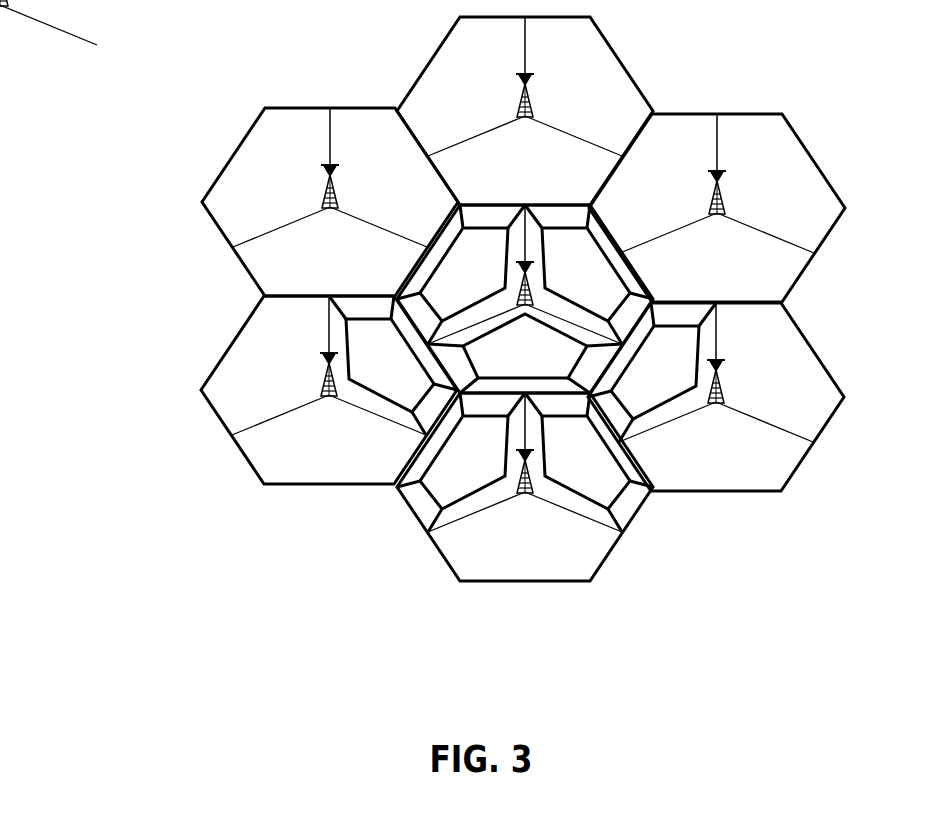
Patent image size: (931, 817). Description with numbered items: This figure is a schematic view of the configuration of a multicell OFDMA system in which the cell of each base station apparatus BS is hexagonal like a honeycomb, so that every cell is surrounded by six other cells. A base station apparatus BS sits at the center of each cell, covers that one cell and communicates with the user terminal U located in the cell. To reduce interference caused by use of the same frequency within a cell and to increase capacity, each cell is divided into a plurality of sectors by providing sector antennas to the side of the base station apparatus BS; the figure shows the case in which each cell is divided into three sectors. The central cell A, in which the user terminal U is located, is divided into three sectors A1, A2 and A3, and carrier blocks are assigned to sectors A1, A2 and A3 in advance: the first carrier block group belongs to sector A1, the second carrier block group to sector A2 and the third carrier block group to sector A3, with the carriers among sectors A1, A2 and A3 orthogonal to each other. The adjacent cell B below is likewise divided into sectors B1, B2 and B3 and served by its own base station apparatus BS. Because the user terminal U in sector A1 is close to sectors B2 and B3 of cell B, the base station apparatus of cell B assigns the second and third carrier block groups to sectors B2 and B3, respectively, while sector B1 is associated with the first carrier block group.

The base station apparatus BS is at (322, 221).
The user terminal U is at (478, 365).
The sector A1 is at (525, 353).
The sector A2 is at (589, 274).
The sector A3 is at (461, 274).
The sector B1 is at (531, 531).
The sector B2 is at (461, 462).
The sector B3 is at (589, 462).
The cell B is at (517, 517).